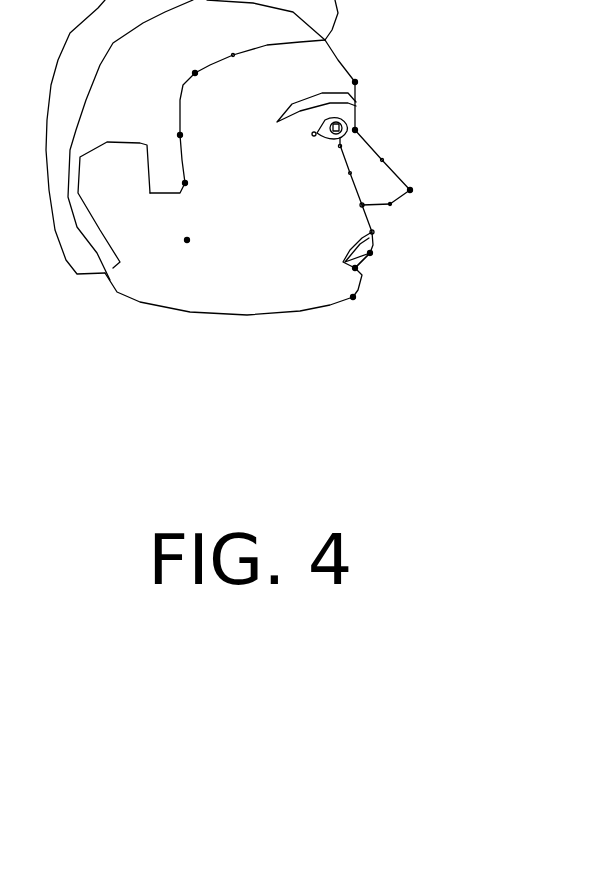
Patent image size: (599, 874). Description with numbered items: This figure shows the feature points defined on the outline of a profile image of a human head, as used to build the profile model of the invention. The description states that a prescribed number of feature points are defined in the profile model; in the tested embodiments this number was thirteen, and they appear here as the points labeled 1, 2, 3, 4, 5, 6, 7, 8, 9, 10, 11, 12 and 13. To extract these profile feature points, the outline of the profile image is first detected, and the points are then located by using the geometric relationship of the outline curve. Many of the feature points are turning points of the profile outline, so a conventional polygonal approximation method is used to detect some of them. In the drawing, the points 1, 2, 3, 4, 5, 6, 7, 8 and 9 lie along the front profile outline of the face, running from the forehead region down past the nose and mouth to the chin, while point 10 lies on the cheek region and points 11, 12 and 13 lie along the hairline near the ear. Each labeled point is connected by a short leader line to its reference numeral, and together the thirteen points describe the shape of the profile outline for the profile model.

The nose tip (pronasale) landmark 1 is at (410, 190).
The nasion landmark 2 is at (355, 130).
The glabella/forehead landmark 3 is at (355, 82).
The subnasale landmark 4 is at (362, 205).
The upper lip landmark 5 is at (372, 232).
The stomion (lip junction) landmark 6 is at (370, 253).
The lower lip landmark 7 is at (370, 253).
The labiomental fold landmark 8 is at (355, 268).
The chin (pogonion) landmark 9 is at (353, 297).
The cheek landmark 10 is at (187, 240).
The ear lobe landmark 11 is at (185, 183).
The tragus landmark 12 is at (180, 135).
The upper ear attachment landmark 13 is at (195, 73).